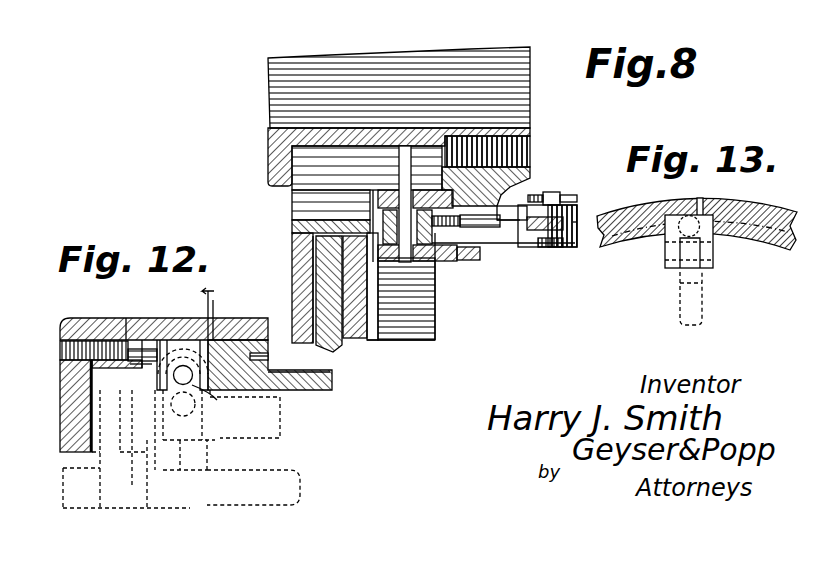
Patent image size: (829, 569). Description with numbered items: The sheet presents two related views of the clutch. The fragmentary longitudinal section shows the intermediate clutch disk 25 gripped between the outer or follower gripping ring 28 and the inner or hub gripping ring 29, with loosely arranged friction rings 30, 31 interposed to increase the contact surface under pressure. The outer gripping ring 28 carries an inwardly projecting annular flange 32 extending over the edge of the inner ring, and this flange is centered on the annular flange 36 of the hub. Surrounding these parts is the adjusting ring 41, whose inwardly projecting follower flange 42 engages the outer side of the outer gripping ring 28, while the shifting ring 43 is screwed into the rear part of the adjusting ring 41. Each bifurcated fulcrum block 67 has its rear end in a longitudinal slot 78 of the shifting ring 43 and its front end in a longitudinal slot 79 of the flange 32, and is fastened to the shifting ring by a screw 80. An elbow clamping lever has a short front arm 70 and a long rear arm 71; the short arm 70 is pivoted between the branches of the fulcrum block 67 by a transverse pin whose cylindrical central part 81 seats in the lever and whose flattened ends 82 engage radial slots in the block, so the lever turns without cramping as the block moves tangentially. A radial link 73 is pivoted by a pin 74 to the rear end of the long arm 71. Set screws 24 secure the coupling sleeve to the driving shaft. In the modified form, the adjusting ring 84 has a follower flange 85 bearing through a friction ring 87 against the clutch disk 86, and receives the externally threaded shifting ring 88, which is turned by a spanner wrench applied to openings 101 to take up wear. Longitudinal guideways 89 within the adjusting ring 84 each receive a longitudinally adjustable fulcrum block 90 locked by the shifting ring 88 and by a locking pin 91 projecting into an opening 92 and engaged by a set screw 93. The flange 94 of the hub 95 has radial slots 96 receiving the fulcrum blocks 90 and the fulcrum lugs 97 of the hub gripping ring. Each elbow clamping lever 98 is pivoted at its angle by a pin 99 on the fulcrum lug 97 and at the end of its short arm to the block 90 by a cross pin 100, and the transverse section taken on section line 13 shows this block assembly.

In FIG. 8, the adjusting ring 41 is at (450, 87).
In FIG. 8, the follower flange 42 is at (268, 166).
In FIG. 8, the longitudinal slot 78 is at (446, 140).
In FIG. 8, the annular flange 32 is at (350, 218).
In FIG. 8, the shifting ring 43 is at (531, 170).
In FIG. 8, the cylindrical central part 81 is at (406, 256).
In FIG. 8, the flattened ends 82 is at (418, 252).
In FIG. 8, the longitudinal slot 79 is at (392, 198).
In FIG. 8, the fulcrum blocks 67 is at (457, 248).
In FIG. 8, the short front arm 70 is at (470, 243).
In FIG. 8, the long rear arm 71 is at (512, 222).
In FIG. 8, the screw 80 is at (533, 186).
In FIG. 8, the pin 74 is at (556, 248).
In FIG. 8, the radial links 73 is at (578, 224).
In FIG. 8, the outer gripping ring 28 is at (292, 260).
In FIG. 8, the friction ring 30 is at (313, 343).
In FIG. 8, the clutch disk 25 is at (336, 348).
In FIG. 8, the friction ring 31 is at (360, 348).
In FIG. 12, the friction ring 31 is at (108, 468).
In FIG. 8, the inner gripping ring 29 is at (372, 340).
In FIG. 13, the inner gripping ring 29 is at (703, 200).
In FIG. 8, the annular flange 36 is at (436, 322).
In FIG. 12, the annular flange 36 is at (150, 455).
In FIG. 12, the opening 92 is at (100, 319).
In FIG. 12, the set screw 93 is at (60, 352).
In FIG. 12, the adjusting ring 84 is at (150, 346).
In FIG. 12, the follower flange 85 is at (60, 434).
In FIG. 12, the friction ring 87 is at (85, 453).
In FIG. 12, the key seats or guideways 89 is at (183, 340).
In FIG. 12, the locking pin 91 is at (160, 338).
In FIG. 12, the pin 99 is at (183, 391).
In FIG. 12, the fulcrum block 90 is at (269, 340).
In FIG. 13, the fulcrum block 90 is at (713, 256).
In FIG. 12, the section line 13 is at (224, 448).
In FIG. 12, the openings 101 is at (255, 352).
In FIG. 12, the shifting ring 88 is at (318, 390).
In FIG. 12, the cross pin 100 is at (224, 403).
In FIG. 12, the elbow clamping levers 98 is at (280, 438).
In FIG. 13, the elbow clamping levers 98 is at (704, 302).
In FIG. 12, the hub 95 is at (253, 487).
In FIG. 12, the flange 94 is at (206, 470).
In FIG. 12, the clutch disk 86 is at (120, 458).
In FIG. 12, the fulcrum lugs 97 is at (178, 440).
In FIG. 12, the radial slot 96 is at (200, 440).
In FIG. 13, the set screws 24 is at (770, 210).